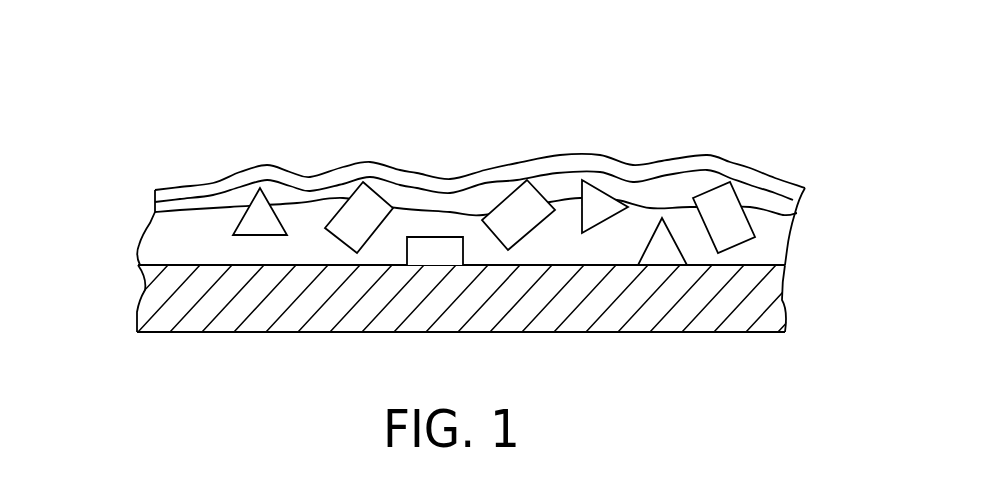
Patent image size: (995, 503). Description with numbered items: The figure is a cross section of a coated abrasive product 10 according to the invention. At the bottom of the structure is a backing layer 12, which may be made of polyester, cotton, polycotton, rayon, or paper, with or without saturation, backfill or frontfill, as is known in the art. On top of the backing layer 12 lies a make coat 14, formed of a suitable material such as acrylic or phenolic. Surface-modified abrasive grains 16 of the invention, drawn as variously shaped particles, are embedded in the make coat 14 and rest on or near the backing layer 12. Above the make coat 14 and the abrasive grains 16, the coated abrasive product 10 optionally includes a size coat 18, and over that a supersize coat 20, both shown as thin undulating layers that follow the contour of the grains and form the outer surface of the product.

The coated abrasive product 10 is at (72, 91).
The backing layer 12 is at (133, 302).
The make coat 14 is at (778, 238).
The surface-modified abrasive grains 16 is at (718, 183).
The size coat 18 is at (417, 198).
The supersize coat 20 is at (518, 162).